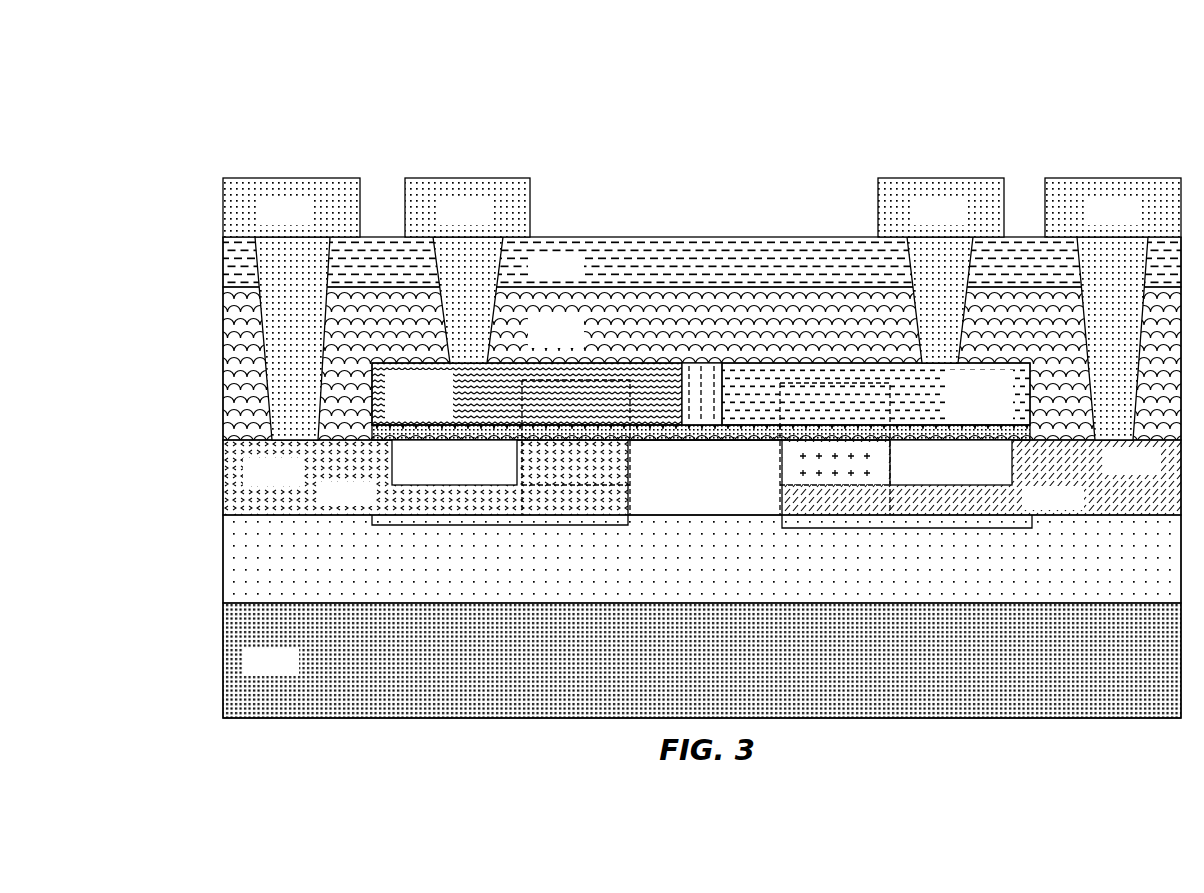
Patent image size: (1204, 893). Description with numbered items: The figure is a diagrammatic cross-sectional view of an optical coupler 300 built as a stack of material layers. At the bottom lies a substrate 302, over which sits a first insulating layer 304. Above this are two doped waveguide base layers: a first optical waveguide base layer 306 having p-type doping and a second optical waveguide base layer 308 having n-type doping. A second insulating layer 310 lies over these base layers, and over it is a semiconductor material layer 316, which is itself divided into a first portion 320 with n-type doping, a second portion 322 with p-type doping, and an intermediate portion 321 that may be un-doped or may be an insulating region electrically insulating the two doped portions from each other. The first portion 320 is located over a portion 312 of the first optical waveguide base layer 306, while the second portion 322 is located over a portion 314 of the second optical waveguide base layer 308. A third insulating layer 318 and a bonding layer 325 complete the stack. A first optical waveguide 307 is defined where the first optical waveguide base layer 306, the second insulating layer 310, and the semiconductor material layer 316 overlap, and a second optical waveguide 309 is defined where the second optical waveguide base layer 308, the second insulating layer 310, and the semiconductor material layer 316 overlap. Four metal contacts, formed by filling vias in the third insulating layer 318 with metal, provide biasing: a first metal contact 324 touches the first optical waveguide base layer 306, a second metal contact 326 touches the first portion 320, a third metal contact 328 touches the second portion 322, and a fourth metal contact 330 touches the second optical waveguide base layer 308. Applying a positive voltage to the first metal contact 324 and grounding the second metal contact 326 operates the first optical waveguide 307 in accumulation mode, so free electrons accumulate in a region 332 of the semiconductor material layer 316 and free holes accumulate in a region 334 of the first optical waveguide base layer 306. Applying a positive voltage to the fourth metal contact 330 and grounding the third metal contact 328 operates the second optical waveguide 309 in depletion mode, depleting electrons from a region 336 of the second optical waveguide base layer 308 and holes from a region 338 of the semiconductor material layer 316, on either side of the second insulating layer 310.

The optical coupler 300 is at (669, 389).
The substrate 302 is at (250, 671).
The first insulating layer 304 is at (250, 571).
The first optical waveguide base layer 306 is at (1110, 473).
The first optical waveguide 307 is at (778, 500).
The second optical waveguide base layer 308 is at (250, 486).
The second optical waveguide 309 is at (635, 487).
The second insulating layer 310 is at (378, 432).
The portion of the first optical waveguide base layer 312 is at (905, 529).
The portion of the second optical waveguide base layer 314 is at (498, 526).
The semiconductor material layer 316 is at (360, 384).
The third insulating layer 318 is at (535, 344).
The first portion of the semiconductor material layer 320 is at (958, 396).
The portion between the first and second portions 321 is at (700, 382).
The second portion of the semiconductor material layer 322 is at (398, 396).
The first metal contact 324 is at (1092, 221).
The bonding layer 325 is at (535, 276).
The second metal contact 326 is at (920, 221).
The third metal contact 328 is at (443, 221).
The fourth metal contact 330 is at (263, 221).
The region of the first optical waveguide 332 is at (859, 397).
The region of the first optical waveguide 334 is at (786, 464).
The region of the second optical waveguide 336 is at (616, 459).
The region of the second optical waveguide 338 is at (606, 372).